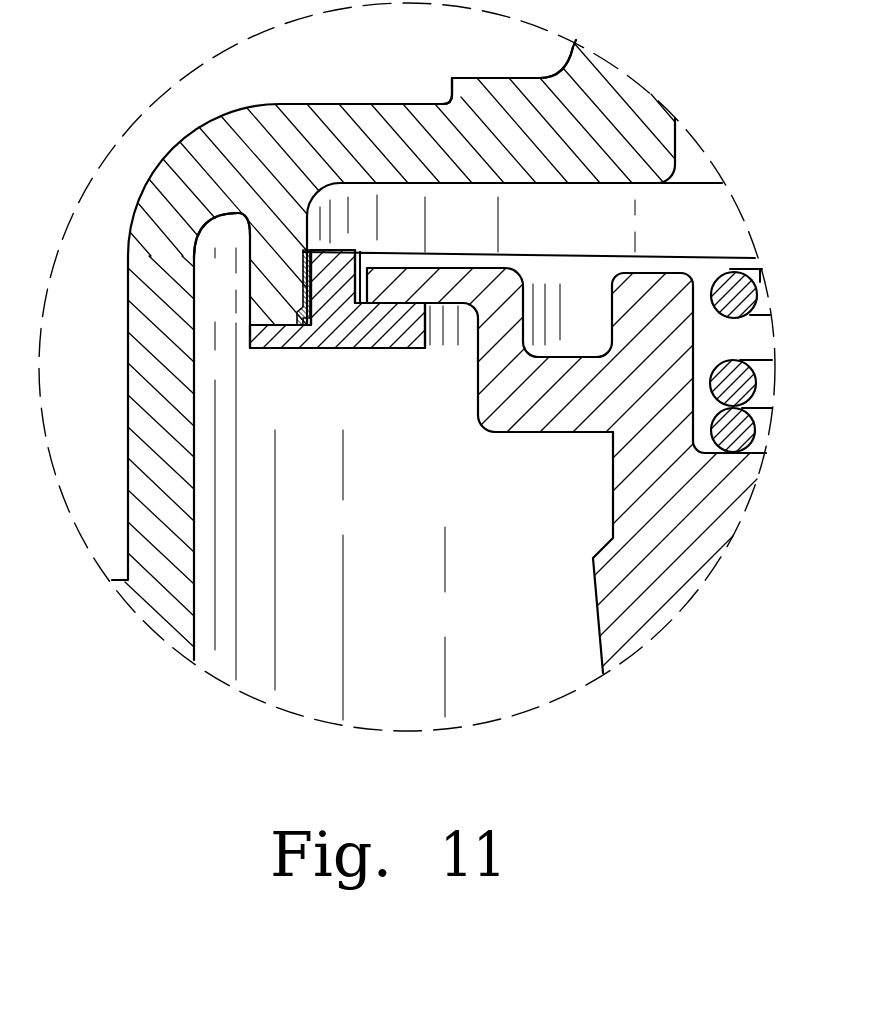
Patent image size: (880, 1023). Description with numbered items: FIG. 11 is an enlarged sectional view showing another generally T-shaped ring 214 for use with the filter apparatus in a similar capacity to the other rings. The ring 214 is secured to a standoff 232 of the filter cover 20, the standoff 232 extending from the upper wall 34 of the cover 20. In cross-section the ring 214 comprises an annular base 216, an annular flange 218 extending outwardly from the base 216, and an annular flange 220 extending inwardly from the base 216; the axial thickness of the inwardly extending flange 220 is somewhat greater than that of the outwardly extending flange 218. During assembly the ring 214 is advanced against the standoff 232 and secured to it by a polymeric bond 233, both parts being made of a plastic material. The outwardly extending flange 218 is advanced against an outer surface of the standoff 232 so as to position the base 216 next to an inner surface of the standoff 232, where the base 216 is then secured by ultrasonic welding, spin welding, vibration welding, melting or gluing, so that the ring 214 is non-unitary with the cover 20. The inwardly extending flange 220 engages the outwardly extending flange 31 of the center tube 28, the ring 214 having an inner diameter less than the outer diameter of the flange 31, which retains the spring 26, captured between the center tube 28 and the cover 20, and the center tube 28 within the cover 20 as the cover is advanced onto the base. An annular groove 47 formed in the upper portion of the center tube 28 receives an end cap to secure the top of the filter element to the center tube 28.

The cover 20 is at (417, 92).
The upper wall 34 is at (300, 108).
The standoff 232 is at (263, 281).
The polymeric bond 233 is at (300, 288).
The ring 214 is at (352, 360).
The annular base 216 is at (347, 257).
The annular flange 218 is at (270, 346).
The annular flange 220 is at (388, 347).
The outwardly extending flange 31 is at (446, 291).
The center tube 28 is at (646, 263).
The spring 26 is at (728, 276).
The annular groove 47 is at (602, 582).